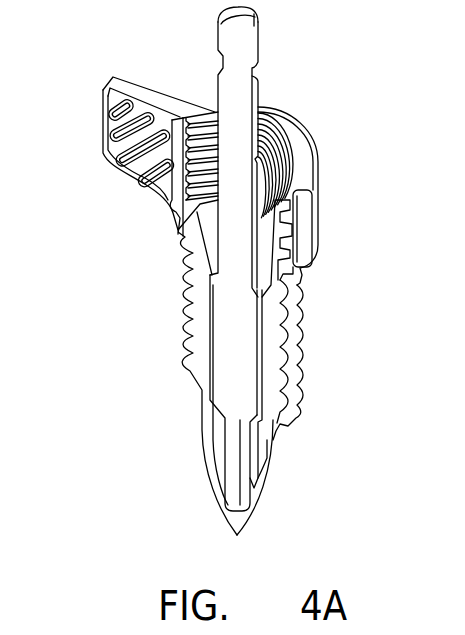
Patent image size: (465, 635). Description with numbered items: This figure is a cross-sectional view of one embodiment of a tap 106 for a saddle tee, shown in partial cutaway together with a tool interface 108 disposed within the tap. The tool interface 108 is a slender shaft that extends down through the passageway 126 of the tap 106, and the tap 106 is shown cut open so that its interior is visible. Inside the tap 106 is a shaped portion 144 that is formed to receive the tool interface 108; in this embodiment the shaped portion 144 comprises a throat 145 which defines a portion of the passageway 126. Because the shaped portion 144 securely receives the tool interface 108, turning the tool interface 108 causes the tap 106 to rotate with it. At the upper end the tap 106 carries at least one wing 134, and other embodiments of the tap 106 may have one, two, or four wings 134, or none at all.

The tool interface 108 is at (237, 40).
The wing 134 is at (158, 95).
The tap 106 is at (305, 230).
The passageway 126 is at (210, 222).
The throat 145 is at (205, 353).
The shaped portion 144 is at (270, 355).